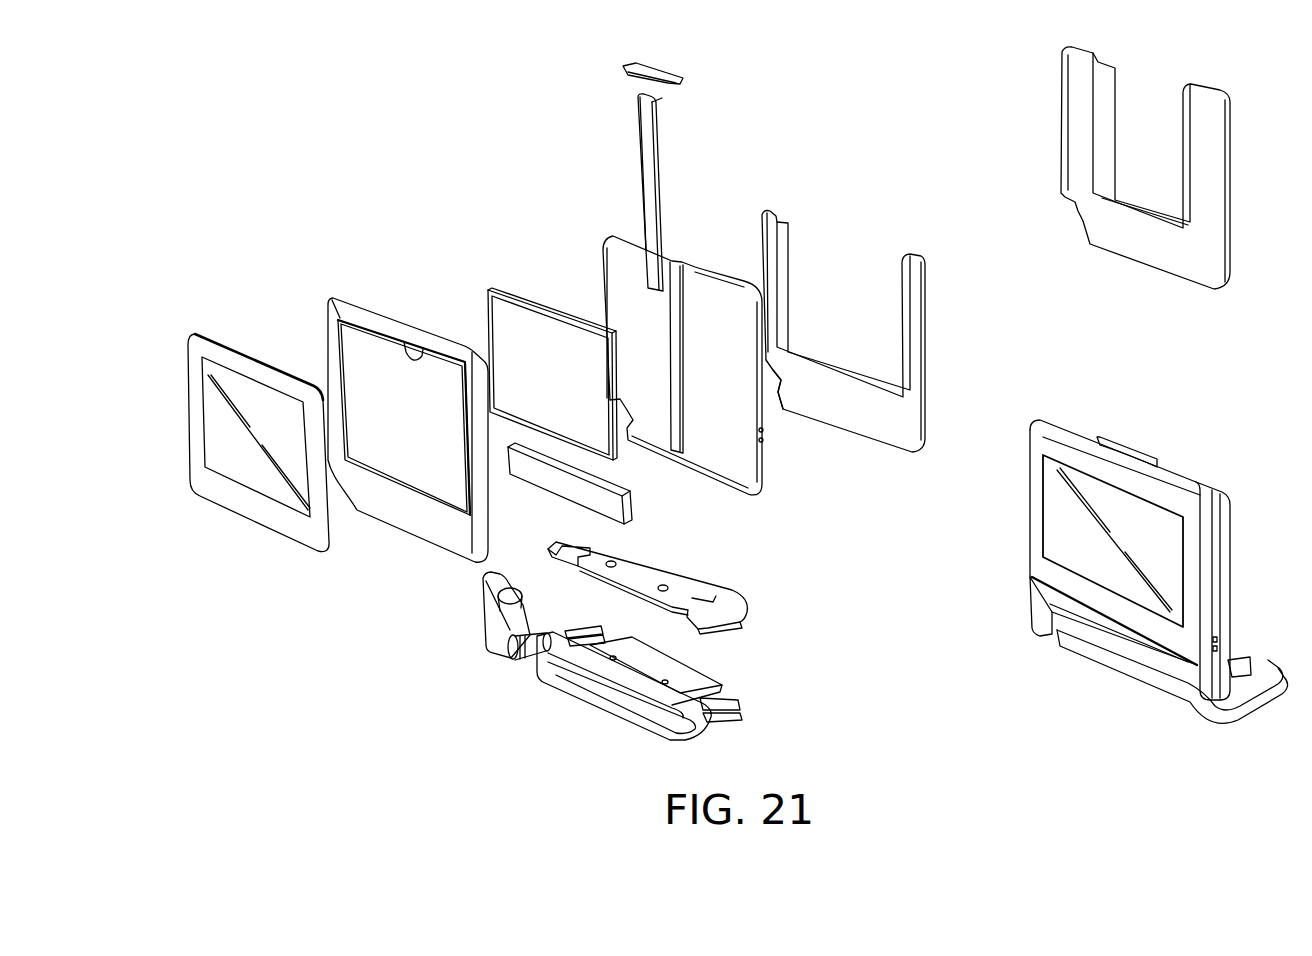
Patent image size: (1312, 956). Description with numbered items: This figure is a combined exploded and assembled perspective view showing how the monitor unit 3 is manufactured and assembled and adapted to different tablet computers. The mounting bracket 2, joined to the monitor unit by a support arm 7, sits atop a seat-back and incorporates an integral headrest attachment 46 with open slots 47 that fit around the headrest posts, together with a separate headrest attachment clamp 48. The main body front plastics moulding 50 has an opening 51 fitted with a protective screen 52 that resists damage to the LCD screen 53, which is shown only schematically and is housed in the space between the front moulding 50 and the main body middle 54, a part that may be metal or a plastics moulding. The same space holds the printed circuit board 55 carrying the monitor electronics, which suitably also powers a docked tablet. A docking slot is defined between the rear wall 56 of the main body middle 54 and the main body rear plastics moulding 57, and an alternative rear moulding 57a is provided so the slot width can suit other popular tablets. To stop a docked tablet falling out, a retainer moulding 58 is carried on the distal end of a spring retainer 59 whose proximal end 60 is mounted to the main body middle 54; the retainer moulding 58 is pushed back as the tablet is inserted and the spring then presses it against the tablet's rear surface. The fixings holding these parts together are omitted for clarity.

The mounting bracket 2 is at (1097, 663).
The monitor unit 3 is at (1048, 525).
The support arm 7 is at (1030, 618).
The headrest attachment 46 is at (627, 653).
The open slots 47 is at (713, 693).
The headrest attachment clamp 48 is at (732, 627).
The main body front plastics moulding 50 is at (370, 298).
The opening 51 is at (420, 347).
The protective screen 52 is at (237, 345).
The LCD screen 53 is at (502, 287).
The main body middle 54 is at (768, 468).
The printed circuit board 55 is at (628, 510).
The rear wall 56 is at (768, 412).
The main body rear plastics moulding 57 is at (923, 328).
The alternative main body rear plastics moulding 57a is at (1110, 243).
The retainer moulding 58 is at (683, 80).
The spring retainer 59 is at (655, 152).
The proximal end 60 is at (648, 272).